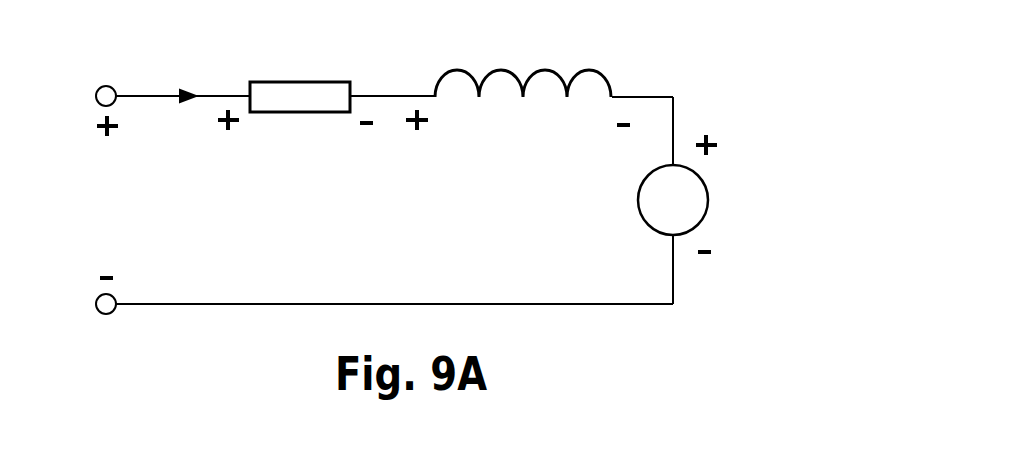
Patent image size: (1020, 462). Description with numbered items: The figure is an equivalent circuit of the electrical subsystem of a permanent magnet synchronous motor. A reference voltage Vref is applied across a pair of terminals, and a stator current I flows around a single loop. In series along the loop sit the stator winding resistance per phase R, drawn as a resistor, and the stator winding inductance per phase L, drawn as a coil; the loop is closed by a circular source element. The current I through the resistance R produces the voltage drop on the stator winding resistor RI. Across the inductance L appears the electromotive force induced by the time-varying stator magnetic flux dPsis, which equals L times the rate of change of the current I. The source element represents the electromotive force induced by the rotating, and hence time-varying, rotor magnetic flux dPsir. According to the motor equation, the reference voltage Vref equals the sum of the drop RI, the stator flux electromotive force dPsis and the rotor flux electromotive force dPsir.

The stator current vector I is at (198, 35).
The stator winding resistance per phase R is at (300, 69).
The voltage drop on the stator winding resistor RI is at (330, 130).
The stator winding inductance per phase L is at (523, 60).
The electromotive force induced by time-varying stator magnetic flux dPsis is at (545, 117).
The electromotive force induced by rotating rotor magnetic flux dPsir is at (785, 162).
The reference voltage vector Vref is at (119, 177).